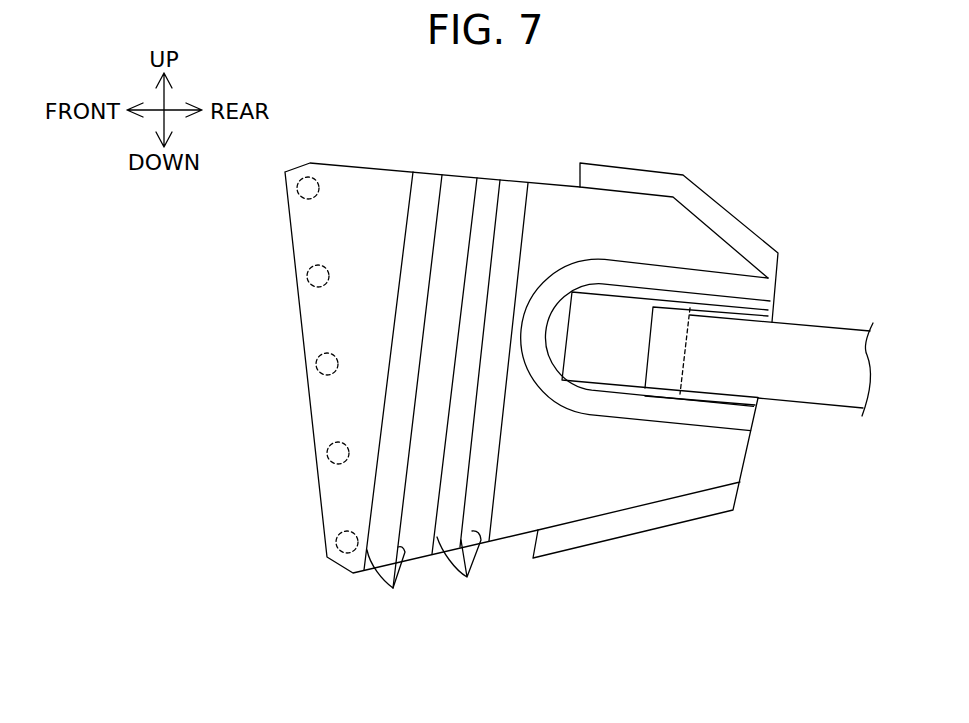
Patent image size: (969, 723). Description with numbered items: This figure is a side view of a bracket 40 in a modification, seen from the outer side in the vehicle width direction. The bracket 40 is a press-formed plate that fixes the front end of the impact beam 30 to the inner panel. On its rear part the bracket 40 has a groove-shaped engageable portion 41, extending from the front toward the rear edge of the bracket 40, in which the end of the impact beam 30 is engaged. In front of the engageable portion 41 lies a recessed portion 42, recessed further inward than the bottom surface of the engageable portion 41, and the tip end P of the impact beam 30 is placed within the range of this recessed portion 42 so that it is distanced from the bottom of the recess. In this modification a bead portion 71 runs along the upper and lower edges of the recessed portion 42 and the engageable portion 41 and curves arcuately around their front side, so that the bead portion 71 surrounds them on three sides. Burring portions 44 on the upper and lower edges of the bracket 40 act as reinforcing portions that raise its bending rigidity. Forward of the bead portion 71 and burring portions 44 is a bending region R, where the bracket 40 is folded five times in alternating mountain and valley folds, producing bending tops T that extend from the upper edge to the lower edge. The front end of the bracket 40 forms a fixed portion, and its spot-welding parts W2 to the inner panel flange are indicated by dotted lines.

The impact beam 30 is at (828, 324).
The bracket 40 is at (664, 385).
The engageable portion 41 is at (746, 400).
The recessed portion 42 is at (608, 378).
The burring portion 44 is at (723, 200).
The bead portion 71 is at (622, 260).
The tip end P is at (648, 344).
The bending region R is at (533, 180).
The bending tops T is at (424, 574).
The welding parts W2 is at (336, 542).